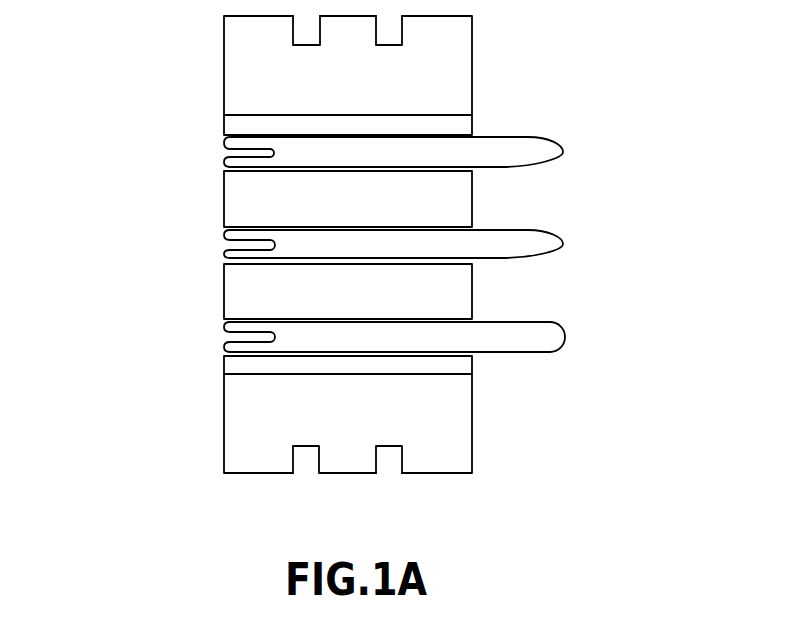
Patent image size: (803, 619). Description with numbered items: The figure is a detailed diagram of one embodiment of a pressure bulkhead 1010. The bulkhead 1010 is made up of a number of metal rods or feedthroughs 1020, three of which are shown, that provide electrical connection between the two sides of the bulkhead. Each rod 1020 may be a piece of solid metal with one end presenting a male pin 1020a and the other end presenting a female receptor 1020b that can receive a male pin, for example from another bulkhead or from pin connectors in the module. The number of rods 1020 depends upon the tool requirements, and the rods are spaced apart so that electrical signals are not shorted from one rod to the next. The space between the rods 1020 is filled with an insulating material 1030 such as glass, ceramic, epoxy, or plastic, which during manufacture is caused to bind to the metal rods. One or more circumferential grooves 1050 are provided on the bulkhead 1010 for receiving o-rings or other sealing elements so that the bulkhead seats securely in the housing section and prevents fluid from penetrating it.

The bulkhead 1010 is at (368, 279).
The metal rods or feedthroughs 1020 is at (376, 202).
The male pin 1020a is at (545, 146).
The female receptor 1020b is at (222, 252).
The insulating material 1030 is at (240, 68).
The circumferential grooves 1050 is at (300, 465).